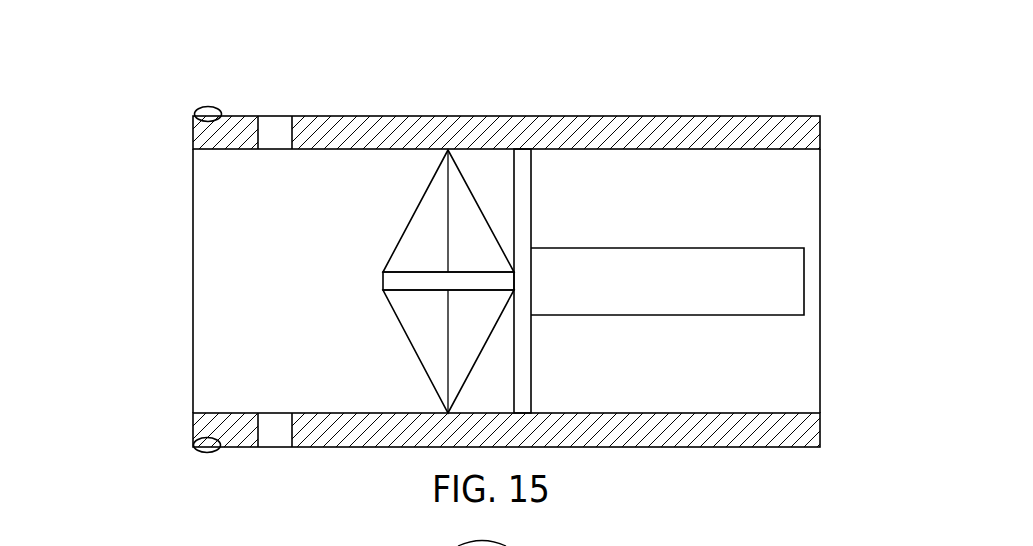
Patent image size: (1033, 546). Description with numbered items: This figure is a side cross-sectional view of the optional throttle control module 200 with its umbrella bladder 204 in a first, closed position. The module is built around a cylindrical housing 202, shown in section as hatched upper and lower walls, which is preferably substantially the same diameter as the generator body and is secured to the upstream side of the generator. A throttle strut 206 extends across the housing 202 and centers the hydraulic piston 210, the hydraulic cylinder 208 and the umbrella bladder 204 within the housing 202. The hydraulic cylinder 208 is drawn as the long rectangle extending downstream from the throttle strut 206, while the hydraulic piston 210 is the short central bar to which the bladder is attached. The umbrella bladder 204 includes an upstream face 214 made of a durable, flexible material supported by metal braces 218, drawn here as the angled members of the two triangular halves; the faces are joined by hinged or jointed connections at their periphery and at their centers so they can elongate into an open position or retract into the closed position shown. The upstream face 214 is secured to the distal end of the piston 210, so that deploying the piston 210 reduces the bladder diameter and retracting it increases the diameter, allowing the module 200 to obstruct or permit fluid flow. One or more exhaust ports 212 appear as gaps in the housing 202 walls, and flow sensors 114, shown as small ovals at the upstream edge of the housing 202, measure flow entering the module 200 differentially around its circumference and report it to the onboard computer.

The throttle control module 200 is at (134, 294).
The cylindrical housing 202 is at (655, 115).
The umbrella bladder 204 is at (508, 345).
The throttle strut 206 is at (523, 163).
The hydraulic cylinder 208 is at (704, 305).
The hydraulic piston 210 is at (380, 282).
The exhaust ports 212 is at (290, 130).
The upstream face 214 is at (400, 323).
The braces 218 is at (448, 223).
The flow sensors 114 is at (207, 106).